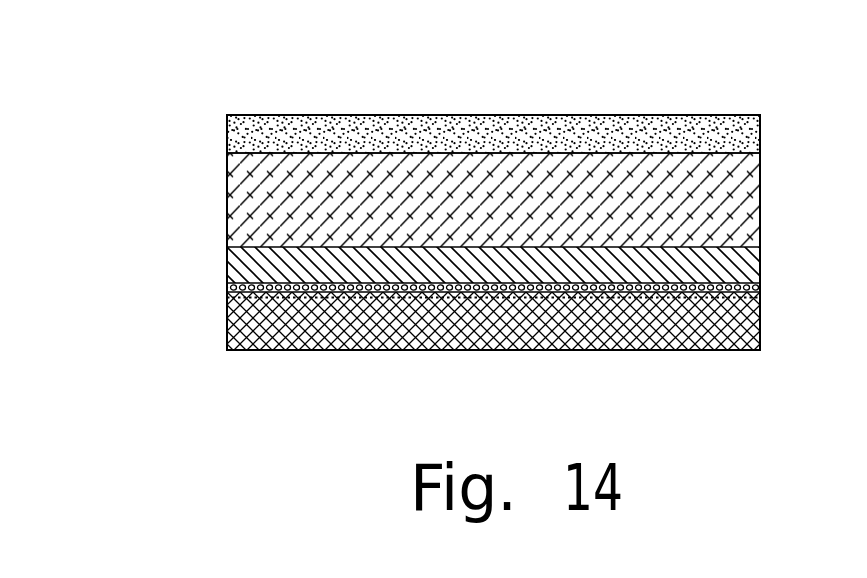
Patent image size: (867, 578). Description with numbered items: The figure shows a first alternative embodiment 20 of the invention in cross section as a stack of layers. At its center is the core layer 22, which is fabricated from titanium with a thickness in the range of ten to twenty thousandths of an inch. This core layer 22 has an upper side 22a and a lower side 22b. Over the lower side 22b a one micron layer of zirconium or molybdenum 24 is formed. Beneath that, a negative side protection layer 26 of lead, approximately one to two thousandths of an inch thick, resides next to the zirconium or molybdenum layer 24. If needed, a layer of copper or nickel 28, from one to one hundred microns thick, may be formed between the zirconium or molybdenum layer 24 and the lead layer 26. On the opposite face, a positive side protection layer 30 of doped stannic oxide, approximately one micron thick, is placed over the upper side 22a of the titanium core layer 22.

The first alternative embodiment 20 is at (478, 100).
The core layer 22 is at (227, 206).
The upper side 22a is at (227, 134).
The lower side 22b is at (227, 252).
The layer of zirconium or molybdenum 24 is at (227, 272).
The negative side protection layer 26 is at (351, 350).
The layer of copper or nickel 28 is at (227, 290).
The positive side protection layer 30 is at (376, 114).